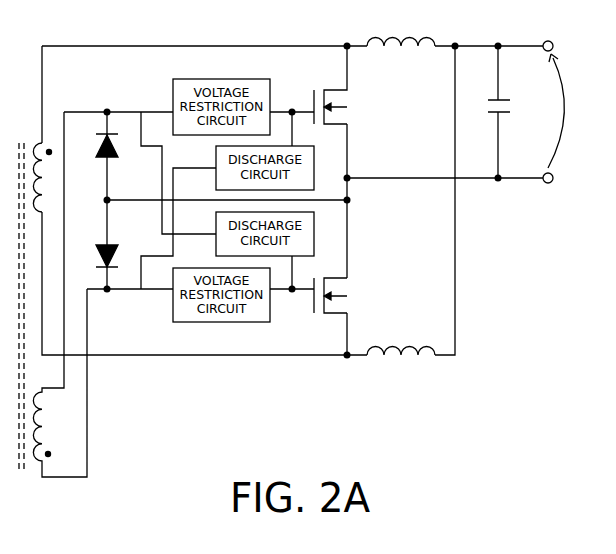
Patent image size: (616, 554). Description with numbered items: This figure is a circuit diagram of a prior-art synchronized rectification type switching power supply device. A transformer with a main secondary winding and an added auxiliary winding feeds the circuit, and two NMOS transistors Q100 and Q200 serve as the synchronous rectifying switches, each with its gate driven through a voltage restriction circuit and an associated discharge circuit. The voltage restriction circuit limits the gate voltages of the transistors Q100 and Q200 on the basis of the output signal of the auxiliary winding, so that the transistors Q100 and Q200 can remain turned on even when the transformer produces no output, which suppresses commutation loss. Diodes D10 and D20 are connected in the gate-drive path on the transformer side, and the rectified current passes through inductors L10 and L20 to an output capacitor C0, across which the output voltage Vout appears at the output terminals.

The first diode D10 is at (92, 156).
The second diode D20 is at (92, 244).
The NMOS transistor Q100 is at (356, 85).
The NMOS transistor Q200 is at (357, 295).
The first inductor L10 is at (401, 25).
The second inductor L20 is at (401, 334).
The output capacitor C0 is at (511, 104).
The output voltage Vout is at (580, 111).